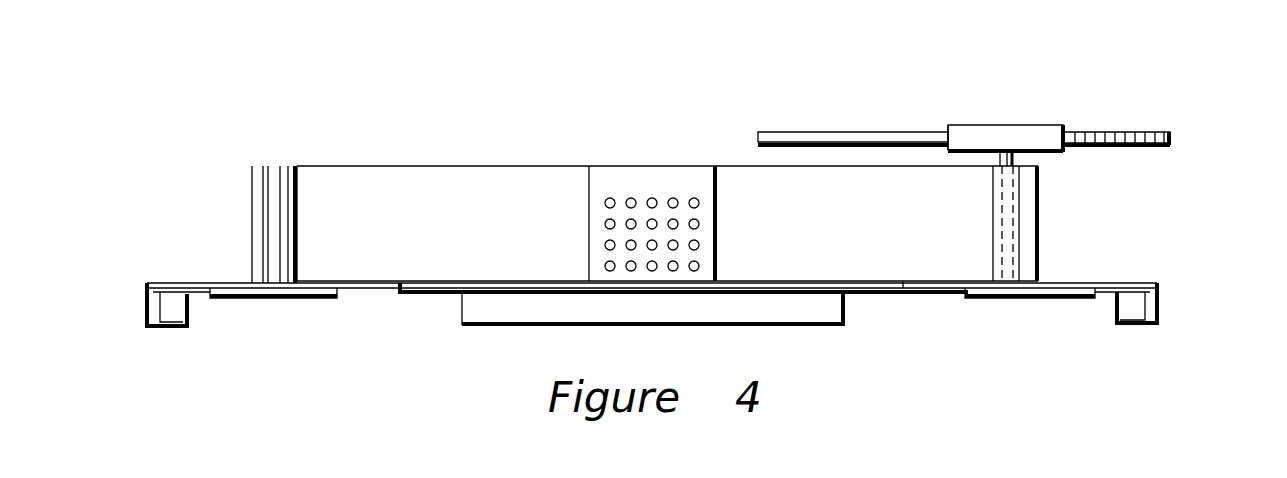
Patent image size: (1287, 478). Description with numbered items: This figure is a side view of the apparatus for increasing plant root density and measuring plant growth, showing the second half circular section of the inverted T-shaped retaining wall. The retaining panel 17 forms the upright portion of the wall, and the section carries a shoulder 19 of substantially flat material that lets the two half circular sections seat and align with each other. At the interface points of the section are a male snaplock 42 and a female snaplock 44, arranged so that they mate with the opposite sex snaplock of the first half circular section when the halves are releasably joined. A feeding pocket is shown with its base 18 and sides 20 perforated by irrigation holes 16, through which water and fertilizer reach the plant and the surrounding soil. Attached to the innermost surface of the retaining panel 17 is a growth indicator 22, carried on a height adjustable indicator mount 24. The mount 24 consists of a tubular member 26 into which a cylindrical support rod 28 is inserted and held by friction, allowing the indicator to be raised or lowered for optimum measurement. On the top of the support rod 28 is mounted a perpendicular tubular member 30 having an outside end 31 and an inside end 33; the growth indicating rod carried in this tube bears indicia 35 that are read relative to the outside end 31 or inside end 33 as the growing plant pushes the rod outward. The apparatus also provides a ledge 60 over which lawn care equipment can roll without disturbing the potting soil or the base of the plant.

The irrigation holes 16 is at (651, 200).
The retaining panel 17 is at (466, 205).
The base 18 is at (562, 280).
The shoulder 19 is at (280, 298).
The sides 20 is at (718, 224).
The growth indicator 22 is at (985, 120).
The height adjustable indicator mount 24 is at (1013, 222).
The tubular member 26 is at (1020, 257).
The cylindrical support rod 28 is at (396, 166).
The perpendicular tubular member 30 is at (1015, 125).
The outside end 31 is at (1065, 128).
The inside end 33 is at (947, 127).
The indicia 35 is at (1130, 130).
The male snaplock 42 is at (1030, 275).
The female snaplock 44 is at (277, 165).
The ledge 60 is at (170, 282).